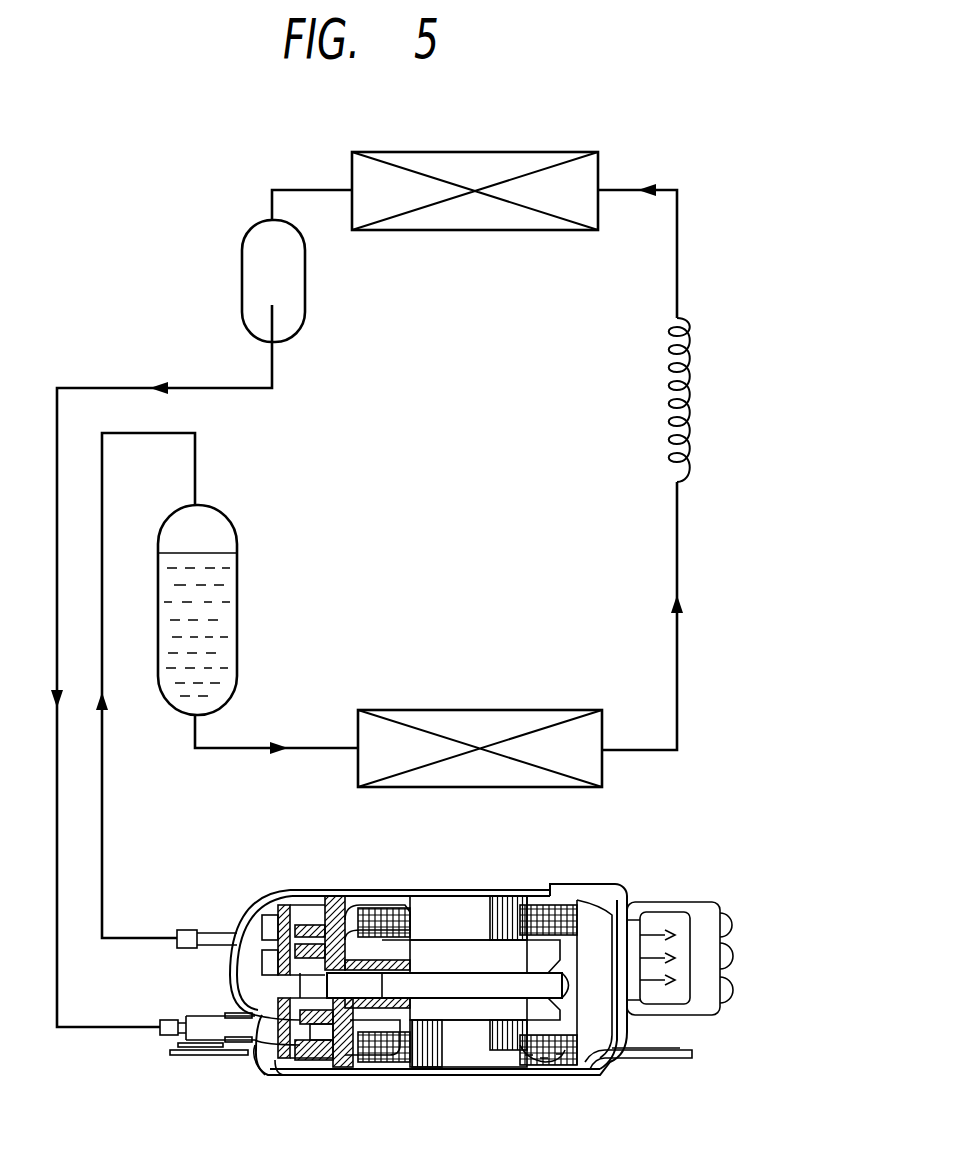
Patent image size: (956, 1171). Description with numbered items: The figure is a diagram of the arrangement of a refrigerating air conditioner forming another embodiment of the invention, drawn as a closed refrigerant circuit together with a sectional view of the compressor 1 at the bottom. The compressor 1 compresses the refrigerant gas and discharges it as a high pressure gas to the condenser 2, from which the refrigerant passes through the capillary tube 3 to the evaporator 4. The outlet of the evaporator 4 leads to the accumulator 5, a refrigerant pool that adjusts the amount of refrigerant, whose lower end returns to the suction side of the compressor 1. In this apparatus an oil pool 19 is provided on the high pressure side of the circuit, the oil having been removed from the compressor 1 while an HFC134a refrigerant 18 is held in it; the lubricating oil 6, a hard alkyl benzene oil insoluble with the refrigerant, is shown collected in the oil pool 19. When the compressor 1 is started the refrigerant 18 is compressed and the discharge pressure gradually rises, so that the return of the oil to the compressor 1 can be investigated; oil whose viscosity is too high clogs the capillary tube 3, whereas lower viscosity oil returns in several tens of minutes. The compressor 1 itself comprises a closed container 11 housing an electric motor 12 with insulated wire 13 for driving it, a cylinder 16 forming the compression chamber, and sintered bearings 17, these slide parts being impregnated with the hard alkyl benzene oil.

The compressor 1 is at (610, 890).
The condenser 2 is at (542, 713).
The capillary tube 3 is at (688, 345).
The evaporator 4 is at (553, 160).
The accumulator 5 is at (256, 256).
The lubricating oil 6 is at (222, 614).
The closed container 11 is at (308, 890).
The electric motor 12 is at (450, 910).
The insulated wire 13 is at (380, 910).
The cylinder 16 is at (312, 1060).
The bearings 17 is at (265, 1017).
The HFC134a refrigerant 18 is at (522, 1075).
The oil pool 19 is at (237, 540).